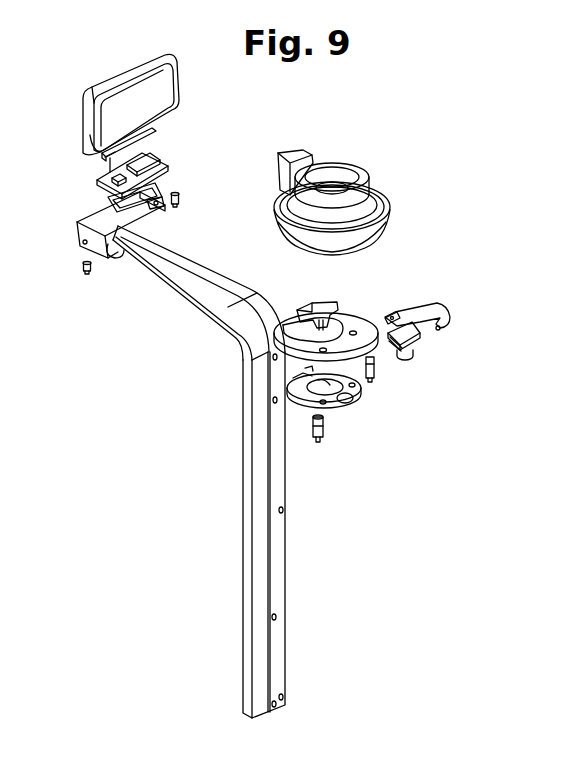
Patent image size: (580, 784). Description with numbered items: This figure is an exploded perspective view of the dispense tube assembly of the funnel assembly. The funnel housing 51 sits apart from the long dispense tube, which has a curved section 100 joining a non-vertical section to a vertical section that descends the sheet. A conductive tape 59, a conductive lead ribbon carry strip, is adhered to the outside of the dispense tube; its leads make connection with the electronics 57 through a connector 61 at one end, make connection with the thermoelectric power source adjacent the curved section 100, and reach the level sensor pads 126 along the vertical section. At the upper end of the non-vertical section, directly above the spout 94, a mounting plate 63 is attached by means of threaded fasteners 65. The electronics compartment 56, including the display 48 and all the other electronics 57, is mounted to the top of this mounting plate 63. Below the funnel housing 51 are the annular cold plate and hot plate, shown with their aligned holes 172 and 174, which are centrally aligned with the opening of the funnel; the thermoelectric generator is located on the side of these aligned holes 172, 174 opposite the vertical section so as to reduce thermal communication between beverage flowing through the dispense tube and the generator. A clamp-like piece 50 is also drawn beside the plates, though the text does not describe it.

The electronics compartment 56 is at (185, 88).
The display 48 is at (156, 132).
The electronics 57 is at (163, 156).
The mounting plate 63 is at (82, 212).
The connector 61 is at (155, 204).
The threaded fasteners 65 is at (82, 272).
The spout 94 is at (122, 252).
The conductive tape 59 is at (208, 268).
The funnel housing 51 is at (354, 172).
The curved section 100 is at (276, 320).
The hole 172 is at (334, 326).
The clamp assembly 50 is at (370, 312).
The hole 174 is at (360, 375).
The level sensor pads 126 is at (284, 510).